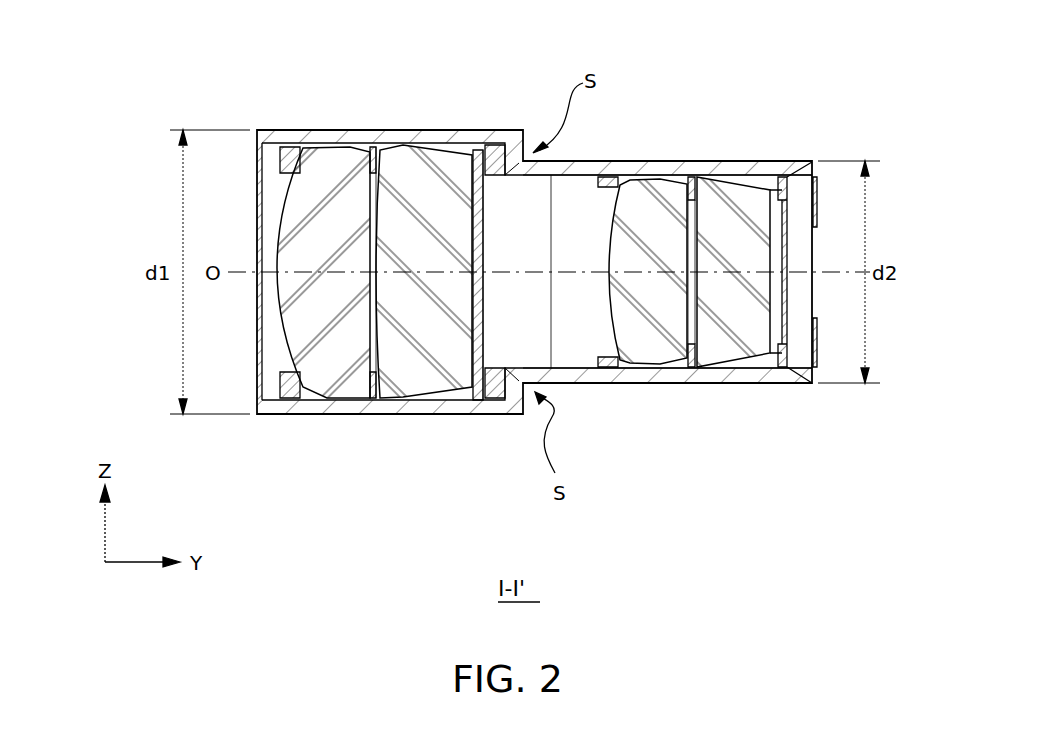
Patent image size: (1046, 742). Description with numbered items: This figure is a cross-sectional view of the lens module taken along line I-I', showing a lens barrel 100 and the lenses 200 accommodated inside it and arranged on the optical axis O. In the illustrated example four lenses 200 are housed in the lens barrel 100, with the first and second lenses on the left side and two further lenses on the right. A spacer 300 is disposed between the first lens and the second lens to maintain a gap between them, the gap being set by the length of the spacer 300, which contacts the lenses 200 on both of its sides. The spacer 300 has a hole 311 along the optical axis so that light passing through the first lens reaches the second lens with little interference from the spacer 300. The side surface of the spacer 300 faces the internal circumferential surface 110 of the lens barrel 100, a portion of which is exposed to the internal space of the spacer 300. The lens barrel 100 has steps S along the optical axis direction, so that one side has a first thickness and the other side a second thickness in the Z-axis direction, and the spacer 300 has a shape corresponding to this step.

The lens barrel 100 is at (385, 135).
The internal circumferential surface 110 is at (567, 358).
The lenses 200 is at (327, 386).
The spacer 300 is at (497, 140).
The hole 311 is at (580, 248).